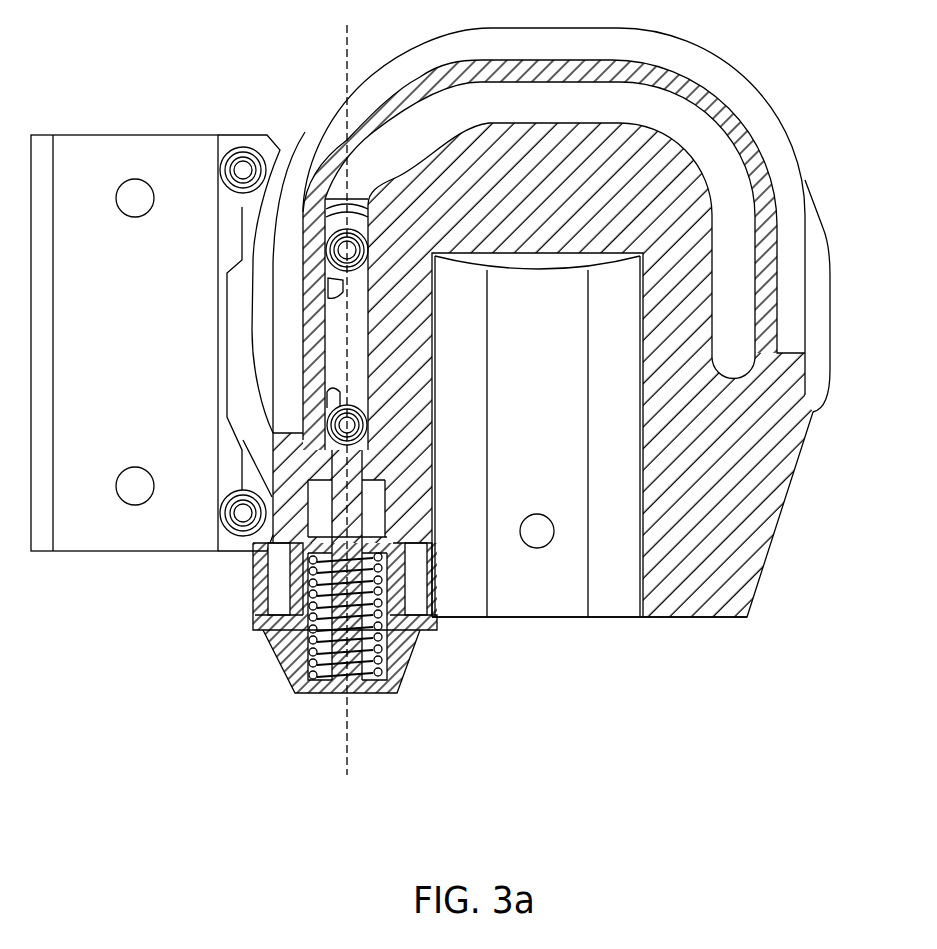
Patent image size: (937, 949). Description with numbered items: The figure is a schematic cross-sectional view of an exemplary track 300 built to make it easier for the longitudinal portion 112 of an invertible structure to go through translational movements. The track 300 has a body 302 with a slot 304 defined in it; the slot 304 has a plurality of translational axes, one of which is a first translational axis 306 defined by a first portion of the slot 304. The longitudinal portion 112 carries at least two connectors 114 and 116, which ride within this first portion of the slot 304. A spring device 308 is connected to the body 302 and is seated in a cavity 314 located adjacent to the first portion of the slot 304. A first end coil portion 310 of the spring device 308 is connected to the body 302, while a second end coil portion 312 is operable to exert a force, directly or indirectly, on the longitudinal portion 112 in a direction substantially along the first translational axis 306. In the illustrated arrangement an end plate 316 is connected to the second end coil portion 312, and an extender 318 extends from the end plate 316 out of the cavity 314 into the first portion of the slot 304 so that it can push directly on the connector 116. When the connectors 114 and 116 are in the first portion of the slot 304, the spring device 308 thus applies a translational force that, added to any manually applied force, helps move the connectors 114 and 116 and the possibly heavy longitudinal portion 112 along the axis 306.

The longitudinal portion 112 is at (125, 536).
The connector 114 is at (348, 245).
The connector 116 is at (258, 545).
The track 300 is at (625, 645).
The body 302 is at (750, 550).
The slot 304 is at (748, 343).
The first translational axis 306 is at (346, 73).
The spring device 308 is at (275, 709).
The first end coil portion 310 is at (373, 677).
The second end coil portion 312 is at (280, 620).
The cavity 314 is at (285, 557).
The end plate 316 is at (348, 513).
The extender 318 is at (375, 615).